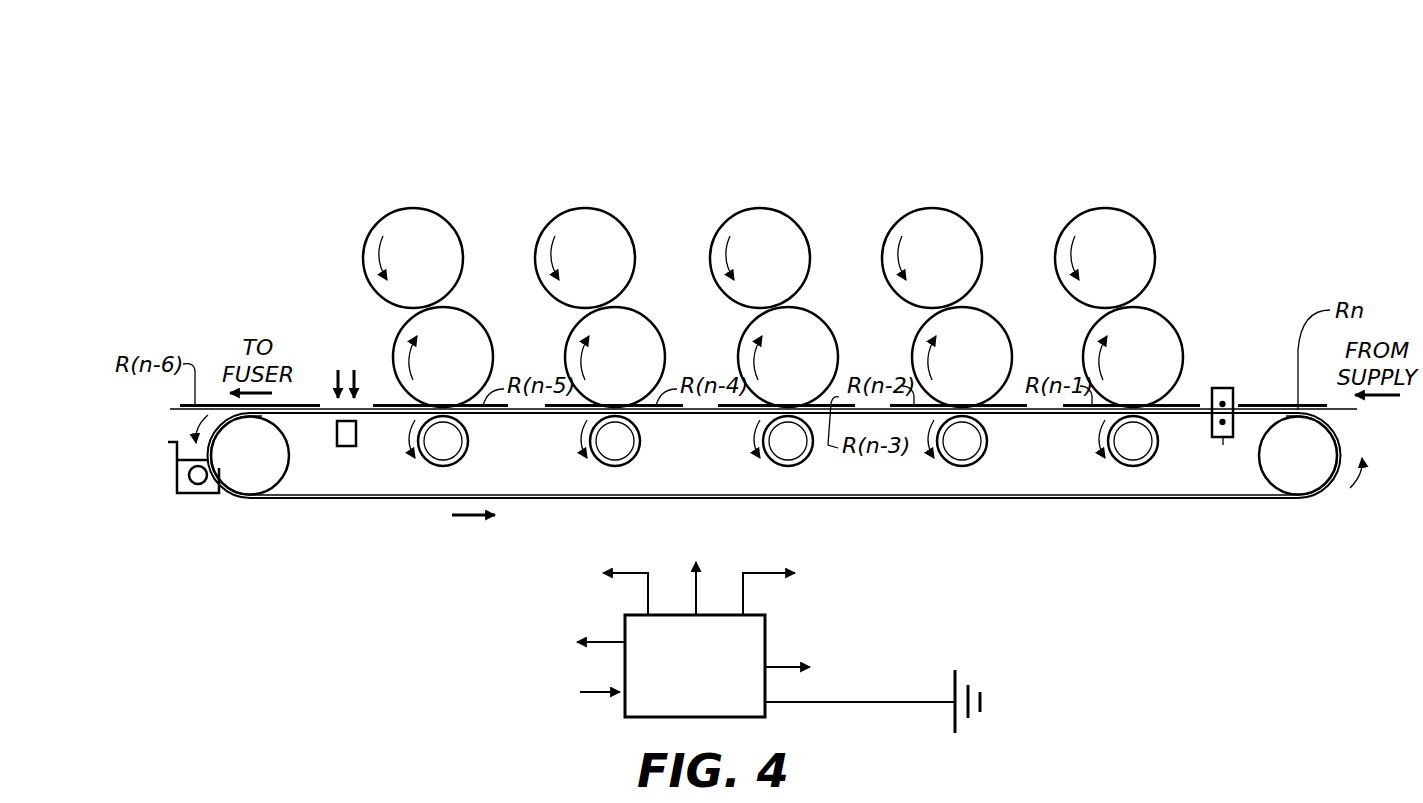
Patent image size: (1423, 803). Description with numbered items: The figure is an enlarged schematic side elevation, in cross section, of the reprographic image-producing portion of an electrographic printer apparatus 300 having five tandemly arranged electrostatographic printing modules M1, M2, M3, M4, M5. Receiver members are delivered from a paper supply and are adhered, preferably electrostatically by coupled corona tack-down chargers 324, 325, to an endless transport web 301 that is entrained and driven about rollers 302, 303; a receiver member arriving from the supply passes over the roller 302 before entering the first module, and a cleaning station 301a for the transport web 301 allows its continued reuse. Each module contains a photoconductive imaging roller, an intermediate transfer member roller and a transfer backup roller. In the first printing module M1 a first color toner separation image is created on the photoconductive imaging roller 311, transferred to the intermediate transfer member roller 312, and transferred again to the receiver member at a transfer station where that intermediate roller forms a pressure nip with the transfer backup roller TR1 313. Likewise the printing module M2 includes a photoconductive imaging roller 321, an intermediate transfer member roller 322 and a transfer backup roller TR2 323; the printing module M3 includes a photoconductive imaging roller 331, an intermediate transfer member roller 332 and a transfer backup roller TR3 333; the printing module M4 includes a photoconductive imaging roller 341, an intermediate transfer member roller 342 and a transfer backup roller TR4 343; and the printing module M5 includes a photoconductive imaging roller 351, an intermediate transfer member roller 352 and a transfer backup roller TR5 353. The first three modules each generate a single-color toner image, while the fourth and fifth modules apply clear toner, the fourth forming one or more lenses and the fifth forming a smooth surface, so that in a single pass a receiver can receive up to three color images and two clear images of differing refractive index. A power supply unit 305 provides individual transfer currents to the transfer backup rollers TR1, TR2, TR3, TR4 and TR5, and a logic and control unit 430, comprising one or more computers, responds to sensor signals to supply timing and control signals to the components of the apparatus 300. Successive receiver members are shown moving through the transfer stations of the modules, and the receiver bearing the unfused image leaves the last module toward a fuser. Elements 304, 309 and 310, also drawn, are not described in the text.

The electrographic printer apparatus 300 is at (1150, 147).
The endless transport web 301 is at (980, 500).
The cleaning station 301a is at (177, 454).
The roller 302 is at (1292, 500).
The roller 303 is at (253, 494).
The sensor 304 is at (345, 447).
The power supply unit 305 is at (766, 645).
The charger 309 is at (338, 370).
The charger 310 is at (359, 378).
The photoconductive imaging roller PC1 311 is at (1142, 222).
The intermediate transfer member roller ITM1 312 is at (1169, 322).
The transfer backup roller TR1 313 is at (1127, 464).
The photoconductive imaging roller PC2 321 is at (969, 222).
The intermediate transfer member roller ITM2 322 is at (998, 322).
The transfer backup roller TR2 323 is at (968, 464).
The corona tack-down charger 324 is at (1223, 388).
The corona tack-down charger 325 is at (1223, 445).
The photoconductive imaging roller PC3 331 is at (797, 222).
The intermediate transfer member roller ITM3 332 is at (824, 322).
The transfer backup roller TR3 333 is at (794, 464).
The photoconductive imaging roller PC4 341 is at (622, 222).
The intermediate transfer member roller ITM4 342 is at (651, 322).
The transfer backup roller TR4 343 is at (617, 465).
The photoconductive imaging roller PC5 351 is at (450, 222).
The intermediate transfer member roller ITM5 352 is at (479, 322).
The transfer backup roller TR5 353 is at (445, 465).
The logic and control unit 430 is at (509, 692).
The printing module M1 is at (1085, 195).
The printing module M2 is at (912, 195).
The printing module M3 is at (740, 195).
The printing module M4 is at (565, 195).
The printing module M5 is at (393, 195).
The transfer backup roller TR1 is at (1141, 464).
The transfer backup roller TR2 is at (952, 464).
The transfer backup roller TR3 is at (778, 464).
The transfer backup roller TR4 is at (640, 443).
The transfer backup roller TR5 is at (468, 443).